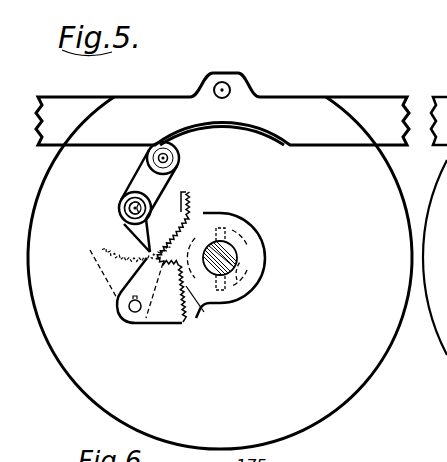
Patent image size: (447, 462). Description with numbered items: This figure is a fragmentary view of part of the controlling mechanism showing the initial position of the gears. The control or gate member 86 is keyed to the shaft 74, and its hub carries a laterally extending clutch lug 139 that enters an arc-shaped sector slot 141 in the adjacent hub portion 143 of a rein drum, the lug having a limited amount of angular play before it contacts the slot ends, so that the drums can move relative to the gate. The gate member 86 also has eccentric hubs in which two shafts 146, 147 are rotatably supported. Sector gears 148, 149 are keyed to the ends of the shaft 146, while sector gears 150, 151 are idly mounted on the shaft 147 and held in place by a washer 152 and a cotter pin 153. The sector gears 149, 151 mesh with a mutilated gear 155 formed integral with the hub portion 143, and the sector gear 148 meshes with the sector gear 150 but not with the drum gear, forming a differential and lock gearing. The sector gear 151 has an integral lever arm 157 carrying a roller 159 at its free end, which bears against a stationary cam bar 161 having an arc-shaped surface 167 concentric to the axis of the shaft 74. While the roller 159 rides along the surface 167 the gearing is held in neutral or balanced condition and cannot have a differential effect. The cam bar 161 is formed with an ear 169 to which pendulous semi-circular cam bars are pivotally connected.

The shaft 74 is at (234, 252).
The control or gate member 86 is at (220, 273).
The clutch lug 139 is at (229, 224).
The sector slot 141 is at (244, 230).
The hub portion 143 is at (232, 270).
The shaft 146 is at (128, 311).
The shaft 147 is at (119, 214).
The sector gear 148 is at (104, 281).
The sector gear 149 is at (163, 318).
The sector gear 150 is at (101, 248).
The sector gear 151 is at (172, 204).
The washer 152 is at (129, 208).
The cotter pin 153 is at (131, 194).
The mutilated gear 155 is at (204, 312).
The lever arm 157 is at (143, 181).
The roller 159 is at (181, 160).
The cam bar 161 is at (337, 108).
The arc-shaped cam surface 167 is at (265, 135).
The ear 169 is at (229, 72).